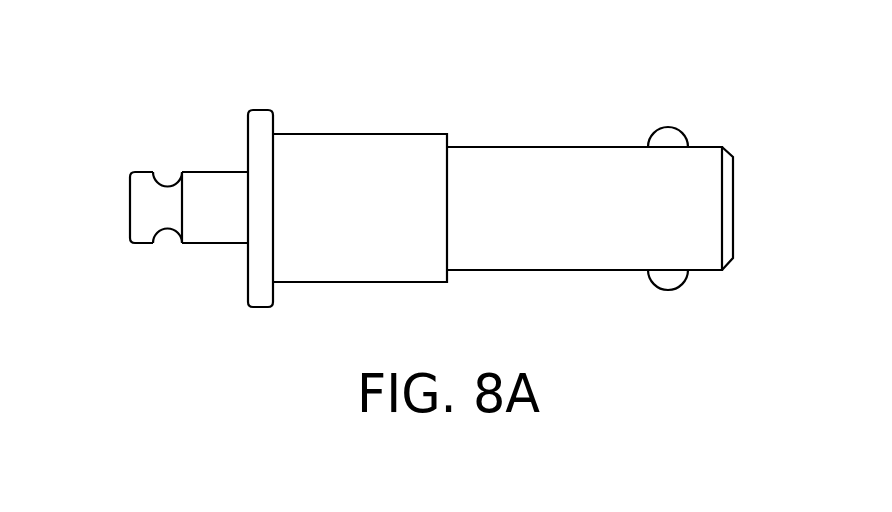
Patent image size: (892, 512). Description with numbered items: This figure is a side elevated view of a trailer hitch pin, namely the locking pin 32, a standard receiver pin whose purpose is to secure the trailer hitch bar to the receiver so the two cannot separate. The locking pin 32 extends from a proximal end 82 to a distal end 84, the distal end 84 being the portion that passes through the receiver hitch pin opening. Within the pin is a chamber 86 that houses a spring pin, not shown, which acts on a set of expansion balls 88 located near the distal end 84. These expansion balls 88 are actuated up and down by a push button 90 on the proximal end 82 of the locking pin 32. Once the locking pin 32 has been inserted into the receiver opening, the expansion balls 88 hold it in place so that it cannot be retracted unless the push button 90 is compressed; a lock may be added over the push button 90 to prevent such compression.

The locking pin 32 is at (335, 133).
The proximal end 82 is at (181, 245).
The distal end 84 is at (722, 271).
The chamber 86 is at (505, 147).
The expansion balls 88 is at (657, 133).
The push button 90 is at (130, 185).